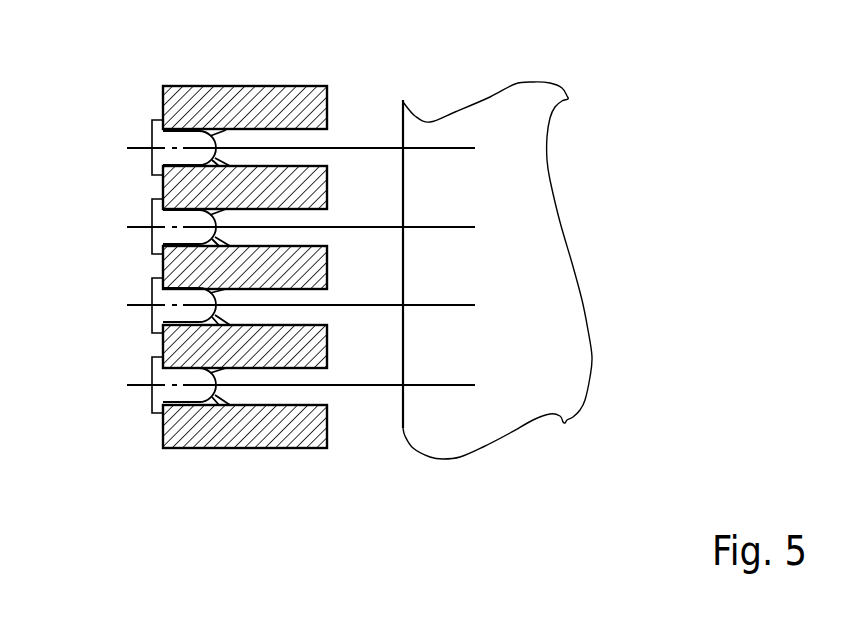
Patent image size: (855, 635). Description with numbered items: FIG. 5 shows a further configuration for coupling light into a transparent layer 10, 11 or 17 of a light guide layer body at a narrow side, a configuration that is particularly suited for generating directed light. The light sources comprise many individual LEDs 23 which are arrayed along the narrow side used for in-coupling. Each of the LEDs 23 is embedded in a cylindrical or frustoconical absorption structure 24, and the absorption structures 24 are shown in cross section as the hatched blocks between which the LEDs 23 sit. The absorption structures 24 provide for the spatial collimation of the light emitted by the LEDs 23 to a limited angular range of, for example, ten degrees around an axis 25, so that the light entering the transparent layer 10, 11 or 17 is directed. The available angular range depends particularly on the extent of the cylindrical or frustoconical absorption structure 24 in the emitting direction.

The transparent layer 10 is at (545, 234).
The transparent layer 11 is at (545, 234).
The transparent layer 17 is at (512, 95).
The individual LEDs 23 is at (153, 162).
The absorption structures 24 is at (250, 90).
The axis 25 is at (366, 147).